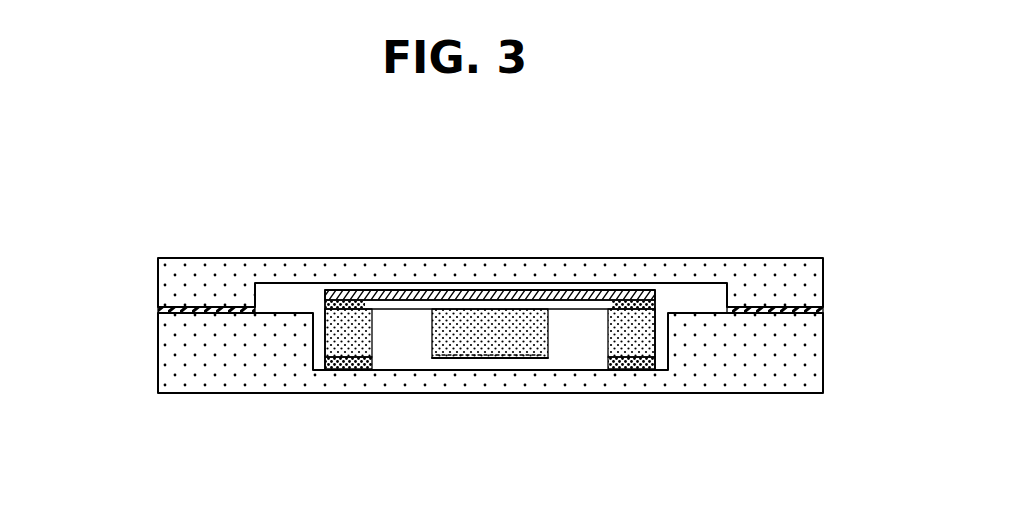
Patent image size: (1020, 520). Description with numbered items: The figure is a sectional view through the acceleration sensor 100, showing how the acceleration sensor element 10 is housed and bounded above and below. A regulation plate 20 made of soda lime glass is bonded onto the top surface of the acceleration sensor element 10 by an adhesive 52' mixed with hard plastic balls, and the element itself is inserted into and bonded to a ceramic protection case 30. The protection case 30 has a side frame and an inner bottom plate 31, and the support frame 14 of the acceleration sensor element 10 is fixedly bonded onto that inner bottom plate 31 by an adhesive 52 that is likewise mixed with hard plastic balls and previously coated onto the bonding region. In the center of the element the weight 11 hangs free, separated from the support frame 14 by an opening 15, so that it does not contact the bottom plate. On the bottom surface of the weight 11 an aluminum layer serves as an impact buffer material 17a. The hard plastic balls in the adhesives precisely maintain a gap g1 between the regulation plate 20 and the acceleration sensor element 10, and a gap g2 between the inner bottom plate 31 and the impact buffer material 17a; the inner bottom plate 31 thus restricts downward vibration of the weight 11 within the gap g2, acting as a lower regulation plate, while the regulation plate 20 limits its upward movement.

The acceleration sensor 100 is at (168, 152).
The acceleration sensor element 10 is at (325, 332).
The weight 11 is at (477, 330).
The support frame 14 is at (340, 364).
The cavity between die pillar and diaphragm 15 is at (392, 315).
The impact buffer material 17a is at (492, 360).
The regulation plate 20 is at (428, 294).
The protection case 30 is at (193, 368).
The inner bottom plate 31 is at (430, 370).
The adhesive 52 is at (625, 416).
The adhesive 52' is at (501, 258).
The gap g1 is at (519, 336).
The gap g2 is at (519, 336).